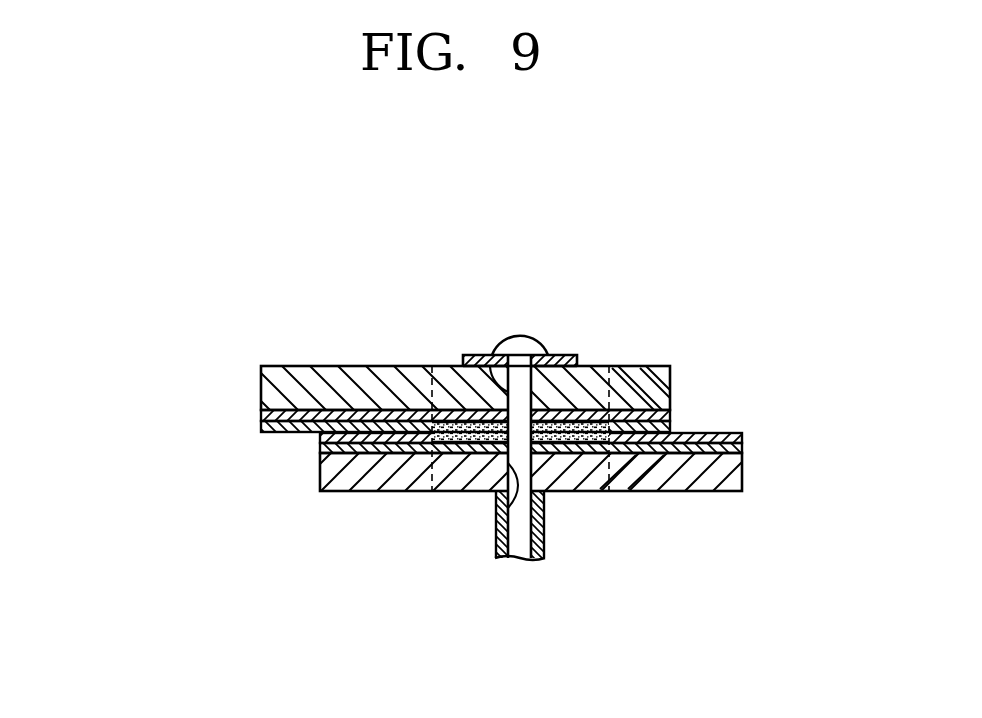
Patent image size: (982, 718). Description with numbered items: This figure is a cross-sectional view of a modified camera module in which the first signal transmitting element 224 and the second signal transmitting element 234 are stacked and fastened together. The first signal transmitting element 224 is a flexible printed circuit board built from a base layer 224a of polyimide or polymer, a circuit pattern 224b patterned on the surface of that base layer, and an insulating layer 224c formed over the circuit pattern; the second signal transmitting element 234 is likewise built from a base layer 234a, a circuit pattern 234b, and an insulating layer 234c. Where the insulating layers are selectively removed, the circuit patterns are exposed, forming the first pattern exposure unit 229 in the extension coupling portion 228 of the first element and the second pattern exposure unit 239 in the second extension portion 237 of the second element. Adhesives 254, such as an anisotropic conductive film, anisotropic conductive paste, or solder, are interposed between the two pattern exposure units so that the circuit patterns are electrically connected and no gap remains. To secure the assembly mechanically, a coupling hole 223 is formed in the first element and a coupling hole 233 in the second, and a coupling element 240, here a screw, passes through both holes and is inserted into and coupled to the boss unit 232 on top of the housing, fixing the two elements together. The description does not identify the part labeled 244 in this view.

The first signal transmitting element 224 is at (162, 357).
The extension coupling portion 228 is at (419, 397).
The base layer 224a is at (264, 382).
The circuit pattern 224b is at (264, 409).
The insulating layer 224c is at (264, 431).
The second signal transmitting element 234 is at (203, 463).
The second extension portion 237 is at (476, 489).
The base layer 234a is at (318, 489).
The circuit pattern 234b is at (318, 452).
The insulating layer 234c is at (318, 444).
The adhesive 254 is at (434, 408).
The coupling hole 223 is at (488, 356).
The coupling element 240 is at (523, 342).
The head flange 244 is at (573, 354).
The first pattern exposure unit 229 is at (593, 385).
The coupling hole 233 is at (498, 505).
The second pattern exposure unit 239 is at (582, 482).
The boss unit 232 is at (492, 556).